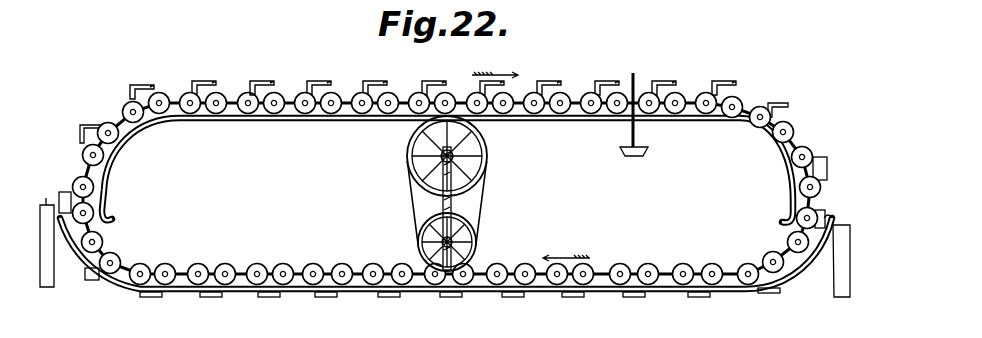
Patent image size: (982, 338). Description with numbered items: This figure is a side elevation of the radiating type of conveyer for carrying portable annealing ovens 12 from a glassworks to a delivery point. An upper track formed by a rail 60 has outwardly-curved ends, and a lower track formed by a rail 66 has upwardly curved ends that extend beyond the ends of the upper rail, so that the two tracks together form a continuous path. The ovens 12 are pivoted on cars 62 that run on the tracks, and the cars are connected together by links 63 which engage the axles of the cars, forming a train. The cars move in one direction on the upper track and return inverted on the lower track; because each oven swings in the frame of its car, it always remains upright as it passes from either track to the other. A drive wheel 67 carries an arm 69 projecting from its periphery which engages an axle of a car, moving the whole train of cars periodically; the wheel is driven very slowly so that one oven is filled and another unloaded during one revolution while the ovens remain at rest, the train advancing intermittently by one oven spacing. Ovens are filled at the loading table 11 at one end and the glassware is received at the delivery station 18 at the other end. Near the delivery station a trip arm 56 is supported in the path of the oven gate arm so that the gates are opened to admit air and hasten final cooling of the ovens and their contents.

The table 11 is at (64, 190).
The portable oven 12 is at (439, 192).
The delivery station 18 is at (842, 224).
The trip arm 56 is at (632, 73).
The rail 60 is at (258, 123).
The car 62 is at (253, 103).
The link 63 is at (343, 93).
The rail 66 is at (115, 285).
The drive wheel 67 is at (405, 166).
The arm 69 is at (412, 186).